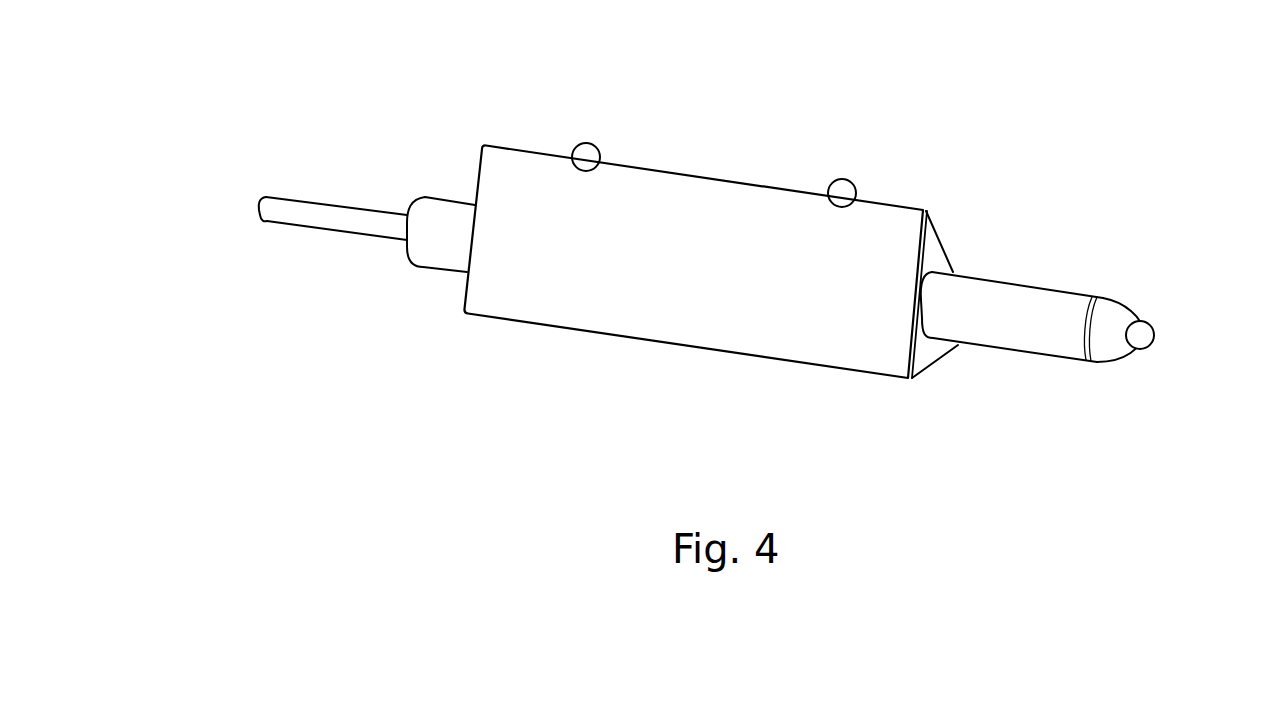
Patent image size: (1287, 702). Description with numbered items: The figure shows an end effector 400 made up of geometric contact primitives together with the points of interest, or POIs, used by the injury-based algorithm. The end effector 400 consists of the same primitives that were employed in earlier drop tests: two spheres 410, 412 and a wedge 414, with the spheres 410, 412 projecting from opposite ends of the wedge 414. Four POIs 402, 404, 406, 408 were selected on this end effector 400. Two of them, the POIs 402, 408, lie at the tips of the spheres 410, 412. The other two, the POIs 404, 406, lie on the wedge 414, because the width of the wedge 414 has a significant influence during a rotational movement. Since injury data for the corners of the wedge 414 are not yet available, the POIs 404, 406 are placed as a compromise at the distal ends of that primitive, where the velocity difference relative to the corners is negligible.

The end effector 400 is at (711, 275).
The POI 402 is at (263, 200).
The POI 404 is at (585, 143).
The POI 406 is at (842, 179).
The POI 408 is at (1154, 333).
The sphere 410 is at (271, 228).
The sphere 412 is at (1124, 371).
The wedge 414 is at (692, 237).